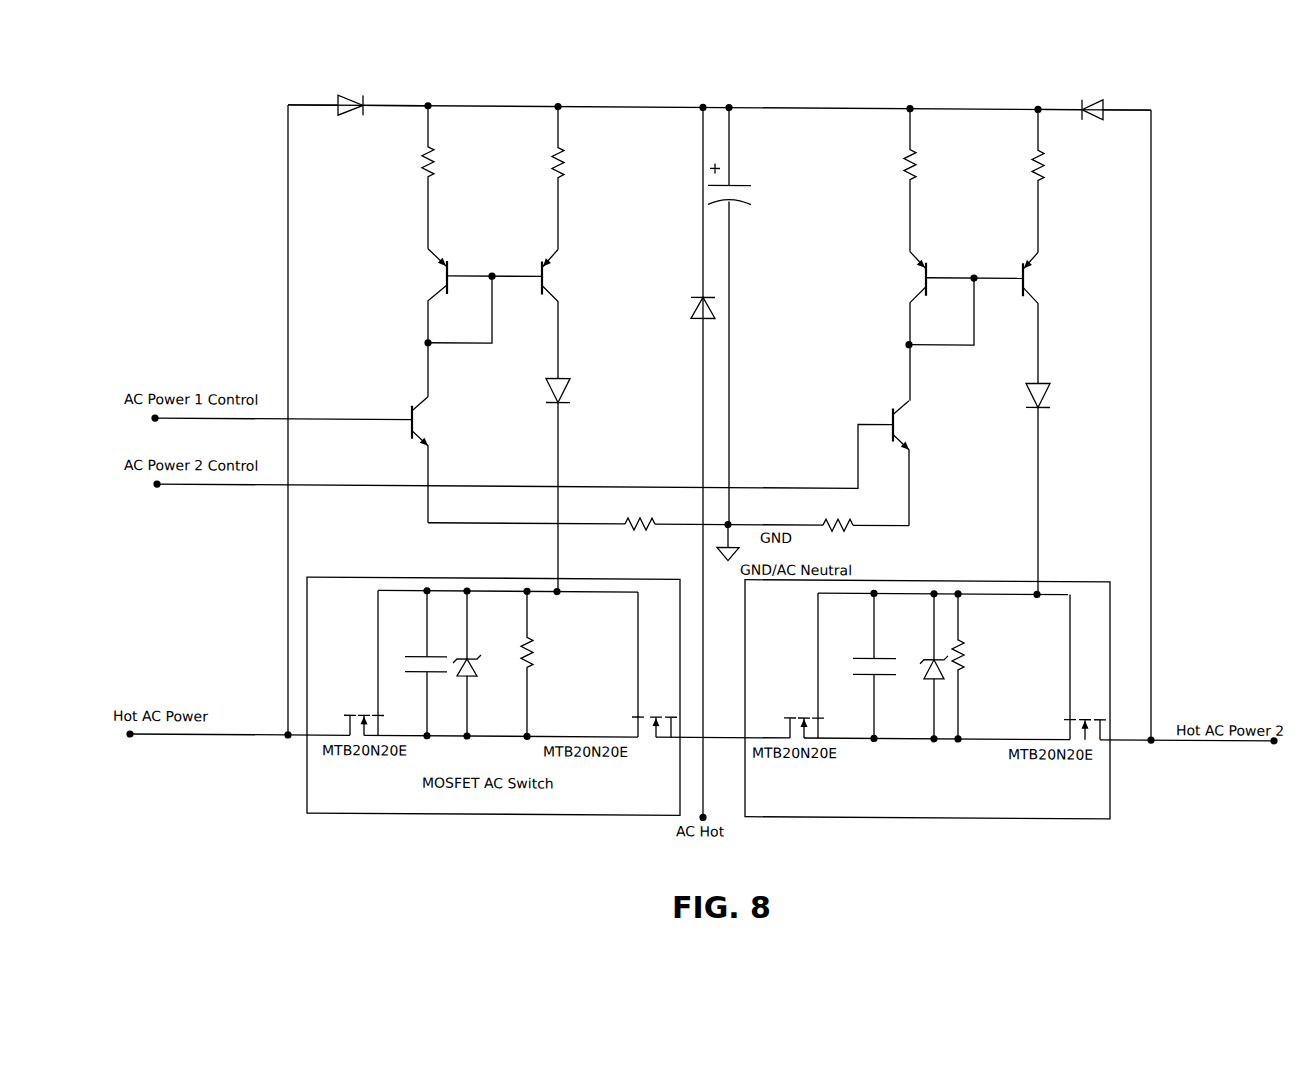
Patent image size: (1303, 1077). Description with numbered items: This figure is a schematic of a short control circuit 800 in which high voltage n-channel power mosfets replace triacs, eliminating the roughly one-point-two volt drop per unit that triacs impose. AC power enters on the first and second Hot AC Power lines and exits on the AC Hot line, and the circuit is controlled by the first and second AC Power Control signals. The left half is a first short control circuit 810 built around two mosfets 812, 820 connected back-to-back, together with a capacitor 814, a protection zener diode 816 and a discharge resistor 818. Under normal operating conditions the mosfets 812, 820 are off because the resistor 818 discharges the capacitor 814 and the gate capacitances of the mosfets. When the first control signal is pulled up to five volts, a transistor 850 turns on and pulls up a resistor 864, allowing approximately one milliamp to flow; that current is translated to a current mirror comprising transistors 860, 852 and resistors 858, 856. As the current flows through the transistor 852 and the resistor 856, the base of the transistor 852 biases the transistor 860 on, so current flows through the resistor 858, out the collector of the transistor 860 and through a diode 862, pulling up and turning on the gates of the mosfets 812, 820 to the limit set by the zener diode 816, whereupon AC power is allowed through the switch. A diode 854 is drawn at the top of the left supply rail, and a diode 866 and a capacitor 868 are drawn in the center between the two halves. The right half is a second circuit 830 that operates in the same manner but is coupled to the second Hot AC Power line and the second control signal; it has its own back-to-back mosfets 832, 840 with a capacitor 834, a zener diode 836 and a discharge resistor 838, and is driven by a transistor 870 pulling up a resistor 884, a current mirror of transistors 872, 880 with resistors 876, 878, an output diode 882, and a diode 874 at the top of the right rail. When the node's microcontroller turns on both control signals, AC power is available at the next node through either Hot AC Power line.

The AC power switch circuit 800 is at (291, 42).
The MOSFET AC switch 810 is at (363, 822).
The mosfet Q1 812 is at (346, 722).
The capacitor C1 814 is at (410, 665).
The zener diode D3 816 is at (478, 672).
The resistor R1 818 is at (533, 666).
The mosfet Q2 820 is at (656, 729).
The second MOSFET AC switch 830 is at (948, 826).
The MOSFET Q3 832 is at (806, 716).
The capacitor C2 834 is at (880, 678).
The zener diode D4 836 is at (930, 683).
The resistor R2 838 is at (963, 668).
The MOSFET Q4 840 is at (1113, 726).
The transistor Q9 850 is at (418, 415).
The transistor Q7 852 is at (436, 262).
The diode D1 854 is at (337, 100).
The resistor R5 856 is at (437, 170).
The resistor R3 858 is at (565, 170).
The transistor Q5 860 is at (546, 288).
The diode D5 862 is at (548, 393).
The resistor R7 864 is at (637, 518).
The diode D7 866 is at (696, 318).
The capacitor C3 868 is at (745, 205).
The transistor Q10 870 is at (898, 420).
The transistor Q8 872 is at (933, 266).
The diode D2 874 is at (1097, 105).
The resistor R6 876 is at (905, 168).
The resistor R4 878 is at (1047, 176).
The transistor Q6 880 is at (1027, 289).
The diode D6 882 is at (1046, 397).
The resistor R8 884 is at (838, 516).